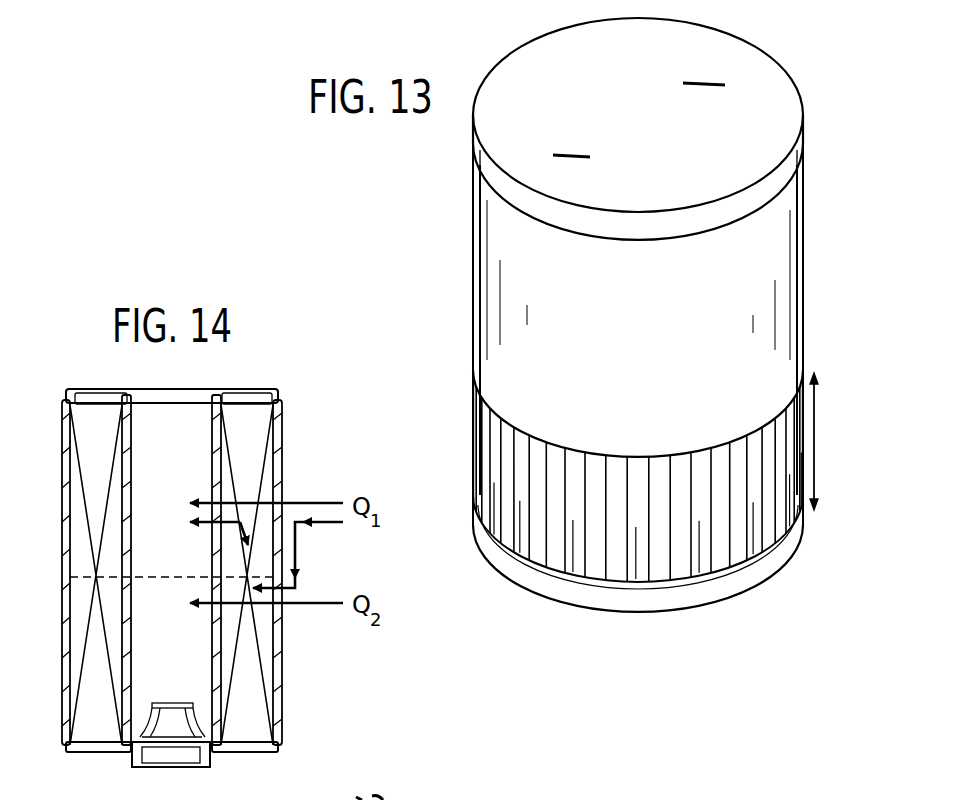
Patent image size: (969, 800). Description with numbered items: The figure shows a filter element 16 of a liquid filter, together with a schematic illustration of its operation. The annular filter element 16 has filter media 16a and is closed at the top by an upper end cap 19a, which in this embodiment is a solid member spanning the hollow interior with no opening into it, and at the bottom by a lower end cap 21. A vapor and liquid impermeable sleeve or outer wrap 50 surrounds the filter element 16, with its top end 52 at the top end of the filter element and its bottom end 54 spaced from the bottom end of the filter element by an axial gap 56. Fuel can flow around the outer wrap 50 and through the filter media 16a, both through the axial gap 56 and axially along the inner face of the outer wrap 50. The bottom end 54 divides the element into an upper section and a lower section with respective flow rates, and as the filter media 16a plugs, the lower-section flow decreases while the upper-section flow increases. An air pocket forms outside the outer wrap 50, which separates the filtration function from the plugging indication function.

In FIG. 13, the filter element 16 is at (497, 460).
In FIG. 14, the filter element 16 is at (82, 661).
In FIG. 14, the filter media 16a is at (250, 671).
In FIG. 13, the upper end cap 19a is at (793, 165).
In FIG. 13, the lower end cap 21 is at (787, 548).
In FIG. 13, the outer wrap 50 is at (780, 302).
In FIG. 14, the outer wrap 50 is at (282, 448).
In FIG. 13, the top end 52 is at (800, 173).
In FIG. 13, the bottom end 54 is at (785, 378).
In FIG. 13, the axial gap 56 is at (815, 448).